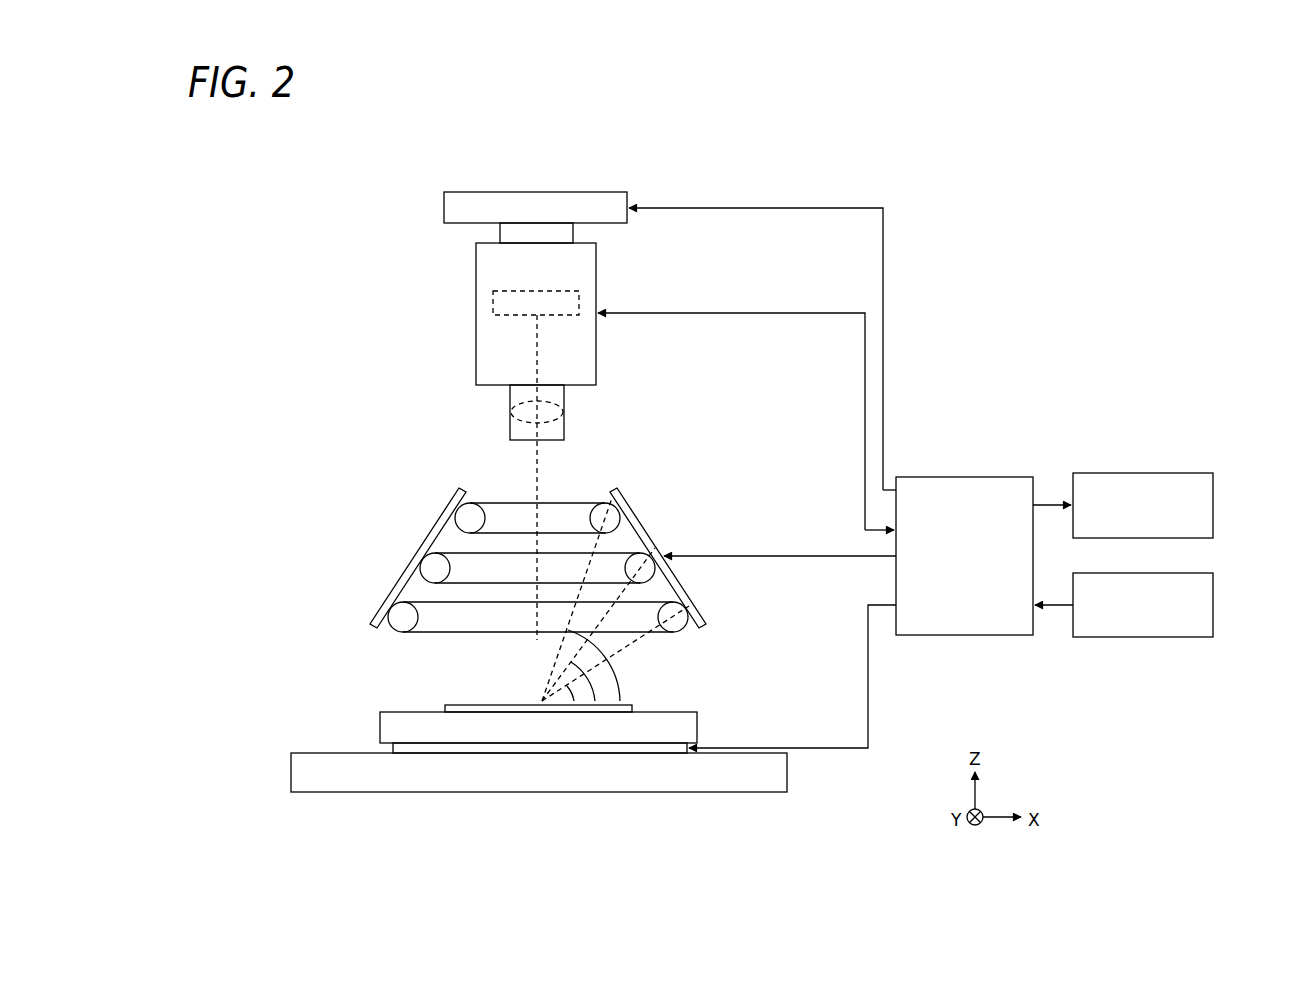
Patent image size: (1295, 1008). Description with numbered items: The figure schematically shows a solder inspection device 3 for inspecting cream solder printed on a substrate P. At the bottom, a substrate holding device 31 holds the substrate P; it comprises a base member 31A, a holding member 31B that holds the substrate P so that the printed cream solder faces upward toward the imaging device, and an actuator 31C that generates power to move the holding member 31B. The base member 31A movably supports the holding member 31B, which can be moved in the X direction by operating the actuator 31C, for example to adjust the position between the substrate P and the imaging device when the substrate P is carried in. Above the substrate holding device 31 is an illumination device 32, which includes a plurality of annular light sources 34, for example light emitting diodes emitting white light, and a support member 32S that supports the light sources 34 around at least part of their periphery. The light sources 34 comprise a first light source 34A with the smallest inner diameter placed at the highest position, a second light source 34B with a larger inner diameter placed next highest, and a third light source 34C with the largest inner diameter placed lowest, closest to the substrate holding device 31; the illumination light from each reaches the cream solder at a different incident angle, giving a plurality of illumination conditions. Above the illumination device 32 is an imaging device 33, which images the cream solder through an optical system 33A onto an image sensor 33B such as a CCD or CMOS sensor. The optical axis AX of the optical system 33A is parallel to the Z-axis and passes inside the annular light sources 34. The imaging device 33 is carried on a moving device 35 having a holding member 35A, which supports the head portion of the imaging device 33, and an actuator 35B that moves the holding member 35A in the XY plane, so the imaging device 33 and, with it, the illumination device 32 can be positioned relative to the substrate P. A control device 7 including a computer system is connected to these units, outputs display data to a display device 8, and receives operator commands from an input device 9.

The solder inspection device 3 is at (328, 378).
The control device 7 is at (986, 478).
The display device 8 is at (1165, 474).
The input device 9 is at (1165, 574).
The substrate holding device 31 is at (375, 736).
The base member 31A is at (291, 773).
The holding member 31B is at (380, 716).
The actuator 31C is at (392, 748).
The illumination device 32 is at (410, 555).
The support member 32S is at (392, 593).
The imaging device 33 is at (474, 311).
The optical system 33A is at (515, 402).
The image sensor 33B is at (503, 318).
The light sources 34 is at (595, 564).
The first light source 34A is at (617, 514).
The second light source 34B is at (655, 568).
The third light source 34C is at (686, 605).
The moving device 35 is at (650, 187).
The holding member 35A is at (500, 238).
The actuator 35B is at (444, 210).
The optical axis AX is at (540, 470).
The substrate P is at (632, 706).